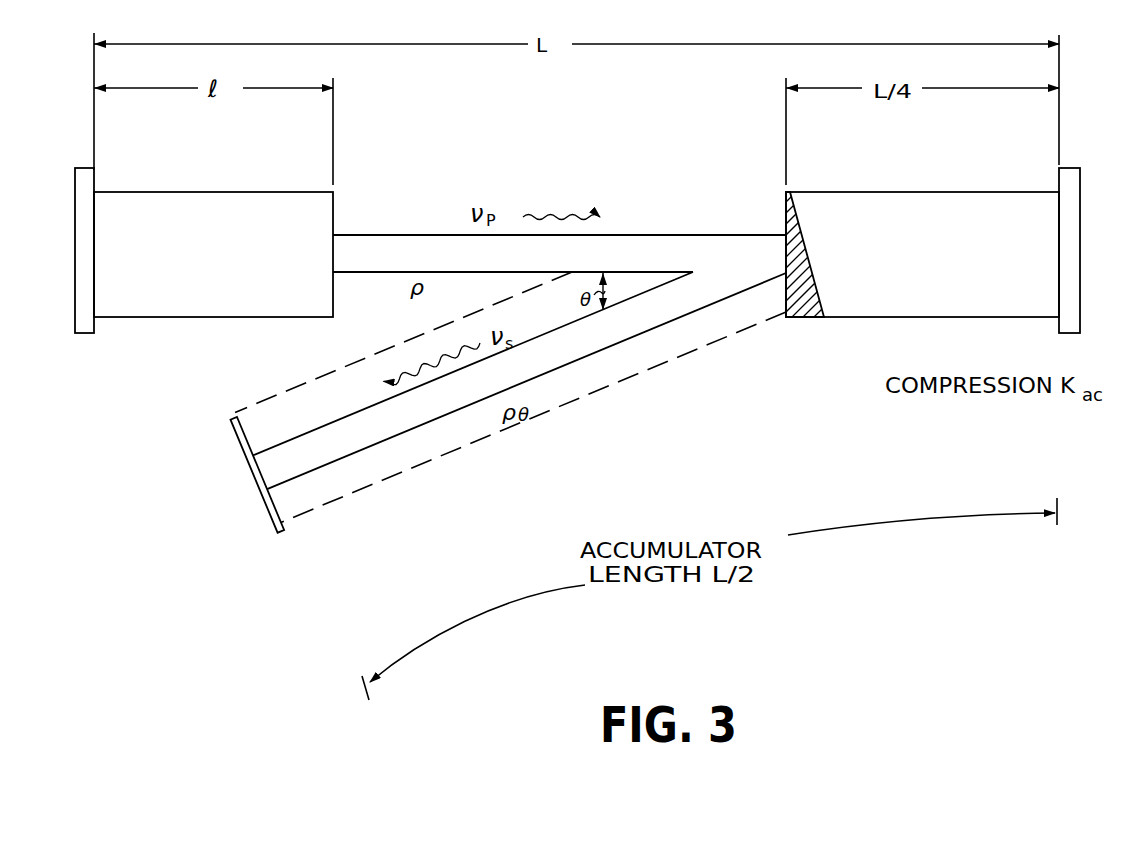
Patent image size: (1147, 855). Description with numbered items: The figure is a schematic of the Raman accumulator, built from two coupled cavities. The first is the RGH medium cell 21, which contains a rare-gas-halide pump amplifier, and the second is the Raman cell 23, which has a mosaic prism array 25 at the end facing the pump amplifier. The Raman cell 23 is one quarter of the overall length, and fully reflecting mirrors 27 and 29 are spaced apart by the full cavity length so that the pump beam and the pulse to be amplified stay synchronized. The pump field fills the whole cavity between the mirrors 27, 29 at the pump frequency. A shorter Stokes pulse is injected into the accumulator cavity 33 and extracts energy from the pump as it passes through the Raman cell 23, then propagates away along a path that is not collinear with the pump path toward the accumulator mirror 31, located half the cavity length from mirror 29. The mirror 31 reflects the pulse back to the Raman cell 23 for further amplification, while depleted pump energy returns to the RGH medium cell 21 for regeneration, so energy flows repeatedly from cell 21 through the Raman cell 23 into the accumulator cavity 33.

The RGH medium cell 21 is at (204, 329).
The Raman cell 23 is at (994, 322).
The mosaic prism array 25 is at (797, 319).
The fully reflecting mirror 27 is at (75, 314).
The fully reflecting mirror 29 is at (1081, 284).
The accumulator mirror 31 is at (243, 455).
The accumulator cavity 33 is at (373, 489).